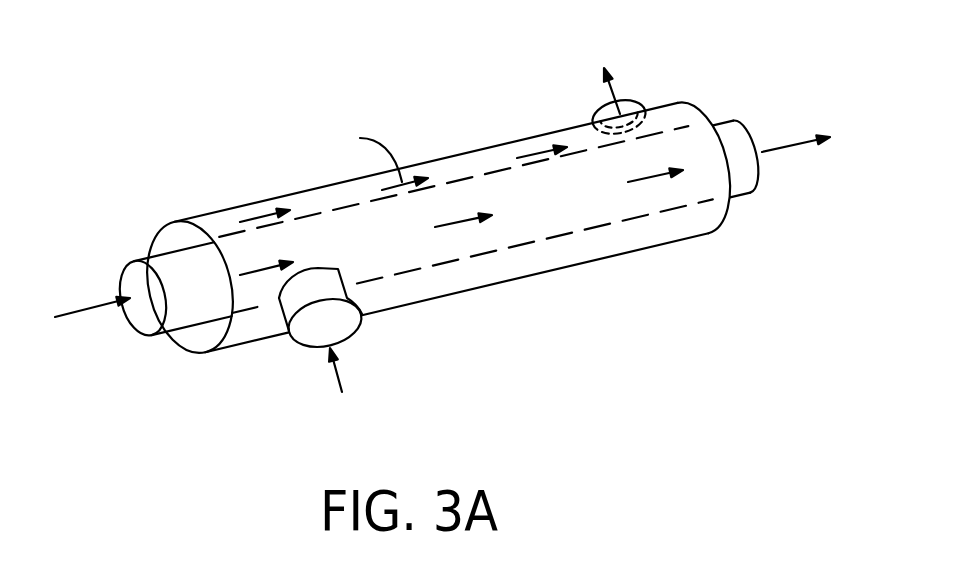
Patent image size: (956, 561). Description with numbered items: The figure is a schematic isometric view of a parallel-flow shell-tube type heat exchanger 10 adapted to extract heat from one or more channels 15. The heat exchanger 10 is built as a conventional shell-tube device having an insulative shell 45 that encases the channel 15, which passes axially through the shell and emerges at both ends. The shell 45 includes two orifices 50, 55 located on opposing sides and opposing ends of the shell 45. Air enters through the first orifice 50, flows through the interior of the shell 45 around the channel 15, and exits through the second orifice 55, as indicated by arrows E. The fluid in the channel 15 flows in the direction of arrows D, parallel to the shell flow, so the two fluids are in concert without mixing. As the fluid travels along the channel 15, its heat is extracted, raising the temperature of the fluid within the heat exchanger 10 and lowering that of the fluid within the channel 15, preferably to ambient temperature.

The heat exchanger 10 is at (443, 232).
The channels 15 is at (137, 258).
The insulative shell 45 is at (197, 218).
The first orifice 50 is at (352, 337).
The second orifice 55 is at (633, 96).